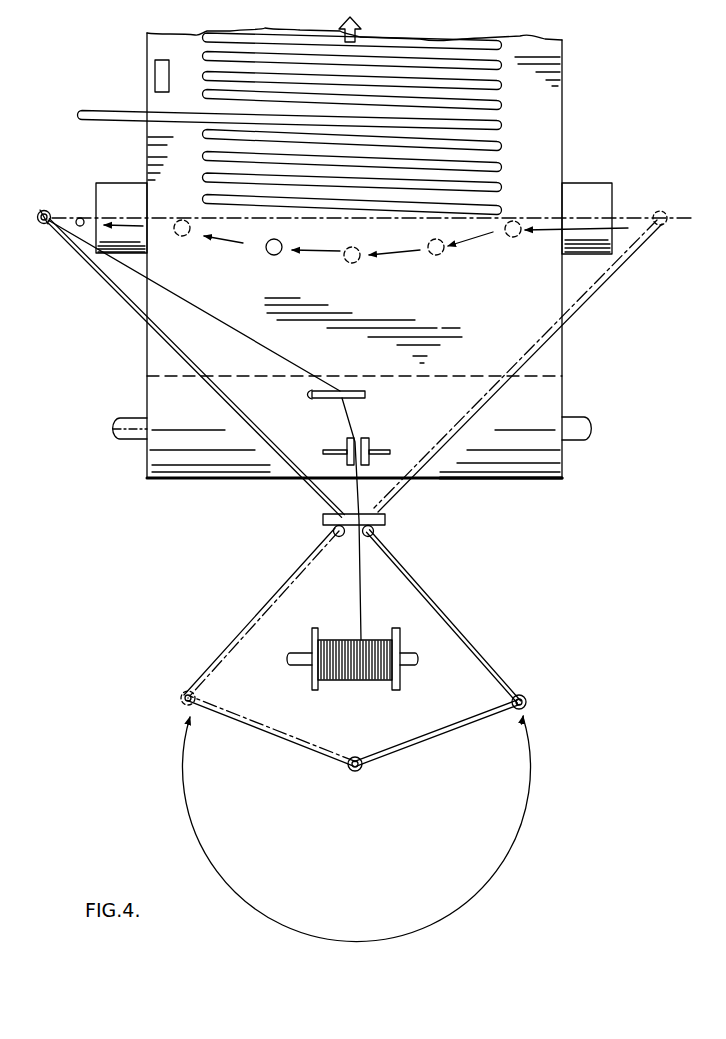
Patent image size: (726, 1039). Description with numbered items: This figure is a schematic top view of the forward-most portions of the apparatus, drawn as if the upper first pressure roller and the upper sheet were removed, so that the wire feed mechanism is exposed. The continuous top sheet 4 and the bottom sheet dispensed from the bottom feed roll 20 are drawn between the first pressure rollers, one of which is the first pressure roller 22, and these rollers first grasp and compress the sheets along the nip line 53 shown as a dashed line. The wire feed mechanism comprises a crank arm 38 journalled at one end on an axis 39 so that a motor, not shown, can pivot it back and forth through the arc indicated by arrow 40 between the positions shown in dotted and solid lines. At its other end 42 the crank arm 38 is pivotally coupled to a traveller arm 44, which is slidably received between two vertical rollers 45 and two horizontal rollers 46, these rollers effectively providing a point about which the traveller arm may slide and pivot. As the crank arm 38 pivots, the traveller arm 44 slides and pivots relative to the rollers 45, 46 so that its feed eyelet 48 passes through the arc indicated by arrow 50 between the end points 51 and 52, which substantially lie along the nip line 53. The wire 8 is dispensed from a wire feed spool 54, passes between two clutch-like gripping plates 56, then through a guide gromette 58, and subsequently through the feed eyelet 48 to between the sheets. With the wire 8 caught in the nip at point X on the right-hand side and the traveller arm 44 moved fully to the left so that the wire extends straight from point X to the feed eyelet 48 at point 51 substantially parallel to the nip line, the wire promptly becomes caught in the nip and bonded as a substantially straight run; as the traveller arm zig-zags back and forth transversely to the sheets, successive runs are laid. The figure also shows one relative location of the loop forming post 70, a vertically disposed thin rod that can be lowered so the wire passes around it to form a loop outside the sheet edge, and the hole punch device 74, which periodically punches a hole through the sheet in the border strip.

The continuous top sheet 4 is at (546, 102).
The wire 8 is at (358, 600).
The bottom feed roll 20 is at (567, 466).
The first pressure roller 22 is at (585, 190).
The crank arm 38 is at (432, 740).
The axis 39 is at (352, 773).
The arrow 40 is at (515, 828).
The other end of crank arm 42 is at (527, 703).
The traveller arm 44 is at (427, 599).
The vertical rollers 45 is at (334, 534).
The horizontal rollers 46 is at (386, 520).
The feed eyelet 48 is at (47, 225).
The arrow 50 is at (388, 254).
The end point 51 is at (42, 207).
The end point 52 is at (662, 209).
The nip line 53 is at (677, 224).
The wire feed spool 54 is at (396, 681).
The clutch-like gripping plates 56 is at (333, 450).
The guide gromette 58 is at (366, 395).
The loop forming post 70 is at (79, 217).
The hole punch device 74 is at (155, 76).
The point X is at (497, 226).